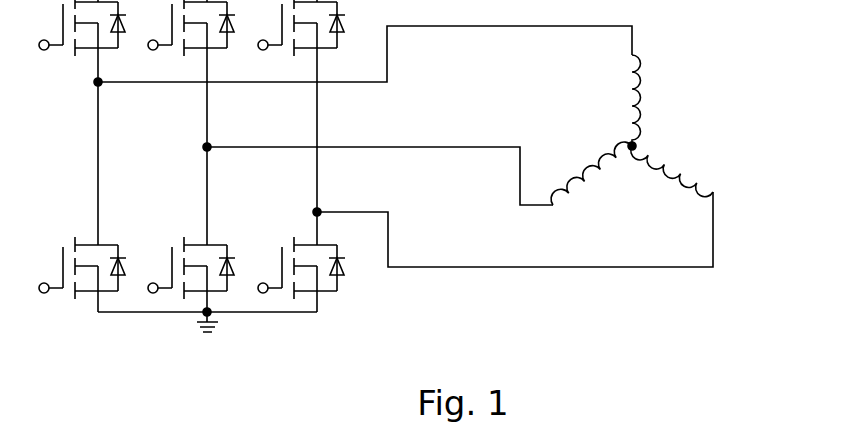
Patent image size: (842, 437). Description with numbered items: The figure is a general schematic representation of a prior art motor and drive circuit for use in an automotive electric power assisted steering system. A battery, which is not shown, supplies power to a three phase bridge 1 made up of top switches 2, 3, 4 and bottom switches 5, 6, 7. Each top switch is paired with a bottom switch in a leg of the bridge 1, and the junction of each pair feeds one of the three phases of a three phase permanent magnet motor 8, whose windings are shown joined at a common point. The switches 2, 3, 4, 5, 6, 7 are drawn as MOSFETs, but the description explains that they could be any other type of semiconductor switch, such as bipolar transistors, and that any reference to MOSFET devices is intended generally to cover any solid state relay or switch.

The 3 phase bridge 1 is at (207, 196).
The top switch 2 is at (82, 40).
The top switch 3 is at (191, 40).
The top switch 4 is at (301, 40).
The bottom switch 5 is at (82, 257).
The bottom switch 6 is at (191, 257).
The bottom switch 7 is at (301, 257).
The 3 phase permanent magnet motor 8 is at (702, 82).